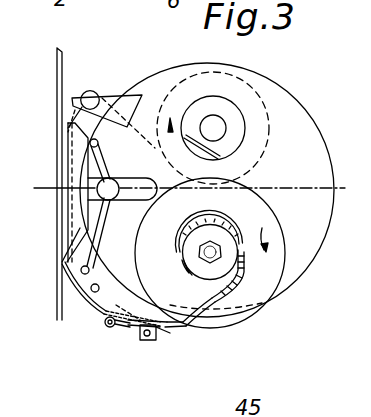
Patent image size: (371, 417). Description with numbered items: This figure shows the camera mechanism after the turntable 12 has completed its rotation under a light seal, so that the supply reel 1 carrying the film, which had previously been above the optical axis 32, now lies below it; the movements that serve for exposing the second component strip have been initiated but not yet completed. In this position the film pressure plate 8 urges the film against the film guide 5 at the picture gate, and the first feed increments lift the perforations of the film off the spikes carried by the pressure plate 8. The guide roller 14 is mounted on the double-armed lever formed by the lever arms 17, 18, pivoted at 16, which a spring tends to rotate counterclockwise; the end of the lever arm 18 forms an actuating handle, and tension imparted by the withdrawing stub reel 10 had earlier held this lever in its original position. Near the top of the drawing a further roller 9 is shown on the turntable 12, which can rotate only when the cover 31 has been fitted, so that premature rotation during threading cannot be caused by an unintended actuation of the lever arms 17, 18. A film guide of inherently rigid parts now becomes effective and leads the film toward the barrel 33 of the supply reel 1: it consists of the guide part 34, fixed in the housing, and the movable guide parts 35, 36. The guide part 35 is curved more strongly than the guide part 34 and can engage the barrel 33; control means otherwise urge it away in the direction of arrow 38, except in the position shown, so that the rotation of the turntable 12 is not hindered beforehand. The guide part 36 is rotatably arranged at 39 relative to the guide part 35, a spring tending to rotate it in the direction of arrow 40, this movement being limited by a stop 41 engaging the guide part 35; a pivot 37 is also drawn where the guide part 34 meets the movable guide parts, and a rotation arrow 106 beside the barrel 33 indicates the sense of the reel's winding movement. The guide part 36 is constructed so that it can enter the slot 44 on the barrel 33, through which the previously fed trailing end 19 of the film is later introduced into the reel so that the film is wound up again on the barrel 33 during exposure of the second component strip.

The supply reel 1 is at (240, 314).
The film guide 5 is at (58, 91).
The film pressure plate 8 is at (80, 218).
The roller 9 is at (93, 97).
The stub reel 10 is at (225, 110).
The turntable 12 is at (294, 111).
The guide roller 14 is at (90, 271).
The pivot of the double-armed lever 16 is at (112, 189).
The lever arm 17 is at (98, 233).
The lever arm 18 is at (103, 163).
The trailing end of the film 19 is at (140, 324).
The cover 31 is at (90, 143).
The optical axis 32 is at (188, 189).
The barrel of the supply reel 33 is at (236, 231).
The guide part 34 is at (88, 306).
The guide part 35 is at (152, 300).
The guide part 36 is at (184, 324).
The pivot 37 is at (107, 327).
The arrow 38 is at (118, 337).
The pivot of the guide part 39 is at (153, 341).
The arrow 40 is at (155, 340).
The stop 41 is at (144, 341).
The slot 44 is at (247, 262).
The rotation arrow 106 is at (268, 238).